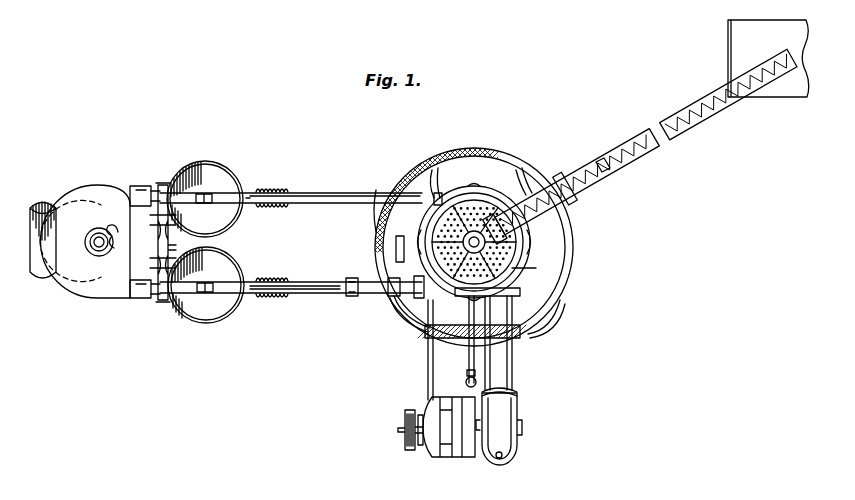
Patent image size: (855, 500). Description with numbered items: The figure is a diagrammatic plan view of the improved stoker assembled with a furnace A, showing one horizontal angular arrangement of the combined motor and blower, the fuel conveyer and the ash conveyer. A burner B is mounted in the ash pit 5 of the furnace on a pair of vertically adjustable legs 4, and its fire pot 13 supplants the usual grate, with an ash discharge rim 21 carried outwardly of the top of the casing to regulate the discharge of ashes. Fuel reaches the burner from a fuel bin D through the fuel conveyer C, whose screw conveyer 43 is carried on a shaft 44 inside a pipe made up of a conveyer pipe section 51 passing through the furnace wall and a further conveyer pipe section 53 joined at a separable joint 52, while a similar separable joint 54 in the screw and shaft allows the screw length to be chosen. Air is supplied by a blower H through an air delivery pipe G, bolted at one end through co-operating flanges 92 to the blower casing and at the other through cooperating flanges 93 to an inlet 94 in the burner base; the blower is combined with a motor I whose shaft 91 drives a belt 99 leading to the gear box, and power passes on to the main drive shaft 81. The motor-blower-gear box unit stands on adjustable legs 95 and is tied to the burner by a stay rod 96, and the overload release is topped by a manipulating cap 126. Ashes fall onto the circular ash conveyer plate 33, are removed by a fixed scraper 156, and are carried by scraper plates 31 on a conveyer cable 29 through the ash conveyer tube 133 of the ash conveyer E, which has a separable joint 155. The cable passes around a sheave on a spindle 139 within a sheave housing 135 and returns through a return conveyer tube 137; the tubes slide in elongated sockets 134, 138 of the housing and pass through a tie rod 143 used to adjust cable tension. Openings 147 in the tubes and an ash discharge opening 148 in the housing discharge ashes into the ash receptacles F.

The furnace A is at (472, 150).
The burner B is at (546, 267).
The fuel conveyer C is at (632, 166).
The fuel bin D is at (728, 47).
The ash conveyer E is at (330, 205).
The ash receptacles F is at (62, 205).
The air delivery pipe G is at (512, 360).
The blower H is at (508, 435).
The motor I is at (450, 455).
The vertically adjustable legs 4 is at (590, 198).
The ash pit 5 is at (568, 240).
The fire pot 13 is at (478, 214).
The ash discharge rim 21 is at (522, 276).
The conveyer cable 29 is at (410, 184).
The scraper plates 31 is at (440, 170).
The ash conveyer plate 33 is at (396, 226).
The screw conveyer 43 is at (520, 176).
The shaft 44 is at (562, 182).
The conveyer pipe section 51 is at (572, 186).
The separable joint of fuel conveyer pipe 52 is at (602, 164).
The conveyer pipe section 53 is at (662, 126).
The separable joint of screw conveyer and shaft 54 is at (608, 184).
The main drive shaft 81 is at (468, 300).
The motor shaft 91 is at (406, 424).
The co-operating flanges 92 is at (518, 392).
The cooperating flanges 93 is at (542, 320).
The inlet 94 is at (520, 294).
The adjustable legs 95 is at (436, 442).
The stay rod 96 is at (428, 370).
The belt 99 is at (408, 440).
The manipulating cap 126 is at (466, 383).
The ash conveyer tube 133 is at (300, 294).
The elongated socket 134 is at (138, 300).
The sheave housing 135 is at (95, 298).
The return conveyer tube 137 is at (298, 193).
The elongated socket 138 is at (137, 186).
The spindle 139 is at (99, 228).
The tie rod 143 is at (168, 300).
The openings 147 is at (206, 194).
The ash discharge opening 148 is at (62, 246).
The separable joint 155 is at (352, 297).
The fixed scraper 156 is at (398, 255).